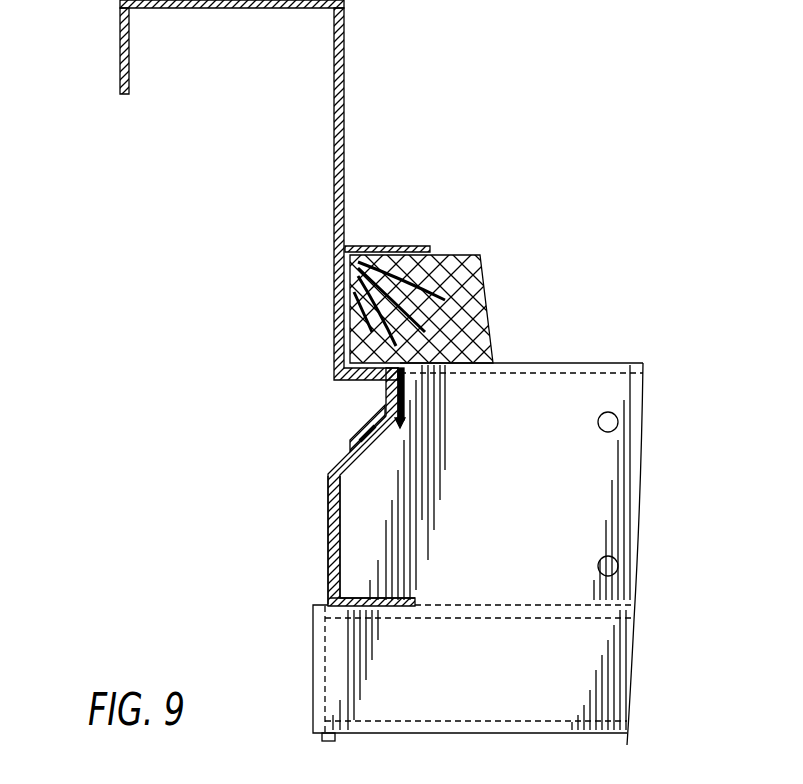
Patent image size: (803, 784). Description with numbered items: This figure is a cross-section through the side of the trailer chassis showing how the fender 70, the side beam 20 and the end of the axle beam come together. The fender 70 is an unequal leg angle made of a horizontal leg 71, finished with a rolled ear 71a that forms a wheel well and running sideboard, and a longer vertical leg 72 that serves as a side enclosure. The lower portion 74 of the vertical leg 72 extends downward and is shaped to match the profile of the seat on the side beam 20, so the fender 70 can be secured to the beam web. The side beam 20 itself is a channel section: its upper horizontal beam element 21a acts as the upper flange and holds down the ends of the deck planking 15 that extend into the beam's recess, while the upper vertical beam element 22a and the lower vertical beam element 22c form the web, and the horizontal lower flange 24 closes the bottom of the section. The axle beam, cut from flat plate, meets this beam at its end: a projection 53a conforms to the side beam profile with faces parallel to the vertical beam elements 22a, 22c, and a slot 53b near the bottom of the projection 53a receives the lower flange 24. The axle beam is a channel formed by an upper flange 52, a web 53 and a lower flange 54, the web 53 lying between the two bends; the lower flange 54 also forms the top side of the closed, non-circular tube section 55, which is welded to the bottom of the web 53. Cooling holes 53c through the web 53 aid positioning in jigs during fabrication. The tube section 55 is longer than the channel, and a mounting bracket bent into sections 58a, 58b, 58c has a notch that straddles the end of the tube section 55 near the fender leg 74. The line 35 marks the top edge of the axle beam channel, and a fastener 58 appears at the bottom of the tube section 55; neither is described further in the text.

The deck planking 15 is at (470, 275).
The side beam 20 is at (439, 266).
The upper horizontal beam element 21a is at (385, 246).
The upper vertical beam element 22a is at (405, 398).
The lower vertical beam element 22c is at (365, 503).
The lower flange 24 is at (385, 603).
The panel top edge 35 is at (528, 358).
The upper flange 52 is at (600, 366).
The web 53 is at (607, 515).
The projection 53a is at (352, 555).
The slot 53b is at (395, 604).
The cooling holes 53c is at (618, 428).
The lower flange 54 is at (633, 605).
The tube section 55 is at (588, 684).
The fastener 58 is at (330, 742).
The mounting bracket section 58a is at (330, 506).
The mounting bracket section 58b is at (350, 468).
The mounting bracket section 58c is at (400, 420).
The fender 70 is at (225, 190).
The horizontal leg 71 is at (246, 6).
The rolled ear 71a is at (122, 38).
The vertical leg 72 is at (345, 70).
The lower portion of the vertical leg 74 is at (386, 398).